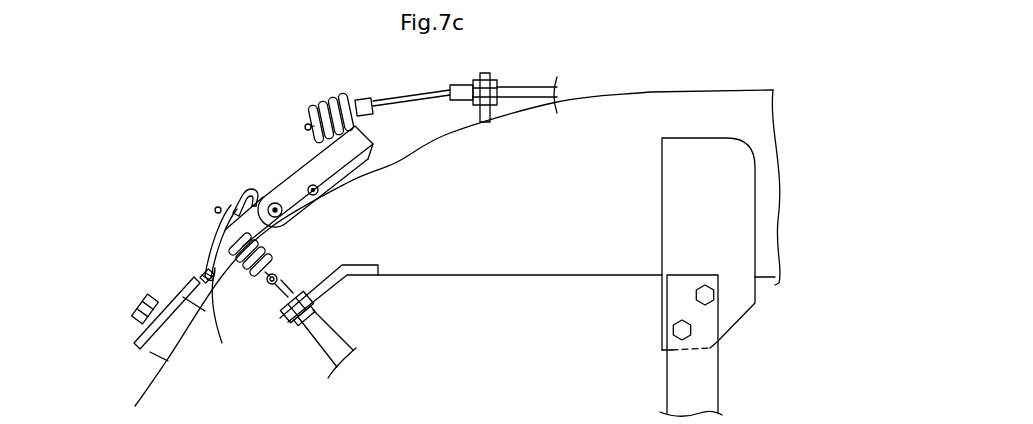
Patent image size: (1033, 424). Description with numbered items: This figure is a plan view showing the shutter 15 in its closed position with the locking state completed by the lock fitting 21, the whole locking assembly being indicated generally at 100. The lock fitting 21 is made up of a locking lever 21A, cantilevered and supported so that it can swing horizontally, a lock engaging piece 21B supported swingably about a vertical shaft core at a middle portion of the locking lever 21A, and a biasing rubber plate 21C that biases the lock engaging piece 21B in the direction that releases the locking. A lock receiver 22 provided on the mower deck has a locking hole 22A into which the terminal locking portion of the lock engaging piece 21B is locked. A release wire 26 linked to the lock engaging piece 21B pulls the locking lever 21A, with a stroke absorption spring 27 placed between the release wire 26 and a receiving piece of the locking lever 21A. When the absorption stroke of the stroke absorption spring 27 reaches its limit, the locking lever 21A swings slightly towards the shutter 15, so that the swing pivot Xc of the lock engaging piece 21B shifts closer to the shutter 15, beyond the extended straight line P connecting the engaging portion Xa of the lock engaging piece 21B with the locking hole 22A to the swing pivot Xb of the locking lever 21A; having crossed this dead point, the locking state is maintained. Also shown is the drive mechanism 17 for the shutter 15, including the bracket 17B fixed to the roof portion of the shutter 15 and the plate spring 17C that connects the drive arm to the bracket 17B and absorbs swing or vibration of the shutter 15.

The shutter 15 is at (600, 113).
The drive mechanism 17 is at (656, 277).
The bracket 17B is at (673, 219).
The plate spring 17C is at (680, 390).
The lock fitting 21 is at (289, 190).
The locking lever 21A is at (340, 160).
The lock engaging piece 21B is at (208, 265).
The biasing rubber plate 21C is at (235, 193).
The lock receiver 22 is at (177, 297).
The locking hole 22A is at (205, 273).
The release wire 26 is at (383, 97).
The stroke absorption spring 27 is at (335, 97).
The tensioning mechanism 100 is at (261, 190).
The straight line P is at (301, 191).
The engaging portion Xa is at (226, 320).
The swing pivot Xb is at (283, 214).
The swing pivot Xc is at (319, 196).